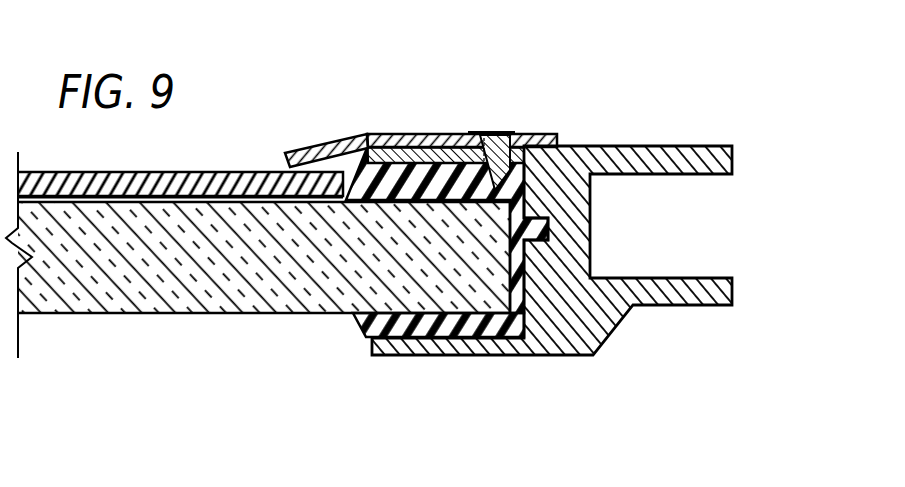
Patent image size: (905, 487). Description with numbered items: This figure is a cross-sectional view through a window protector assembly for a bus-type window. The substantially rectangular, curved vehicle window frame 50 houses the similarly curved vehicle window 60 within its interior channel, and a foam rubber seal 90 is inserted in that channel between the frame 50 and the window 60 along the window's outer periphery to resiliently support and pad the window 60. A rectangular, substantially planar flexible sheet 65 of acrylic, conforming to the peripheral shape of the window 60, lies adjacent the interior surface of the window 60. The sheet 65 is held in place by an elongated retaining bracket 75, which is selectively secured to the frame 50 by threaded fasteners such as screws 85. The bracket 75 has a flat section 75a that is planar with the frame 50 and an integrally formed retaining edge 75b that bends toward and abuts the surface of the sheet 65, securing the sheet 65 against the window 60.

The vehicle window frame 50 is at (650, 146).
The vehicle window 60 is at (137, 315).
The flexible sheet 65 is at (177, 171).
The retaining bracket 75 is at (421, 156).
The flat section 75a is at (428, 135).
The retaining edge 75b is at (301, 150).
The screws 85 is at (499, 131).
The foam rubber seal 90 is at (358, 323).